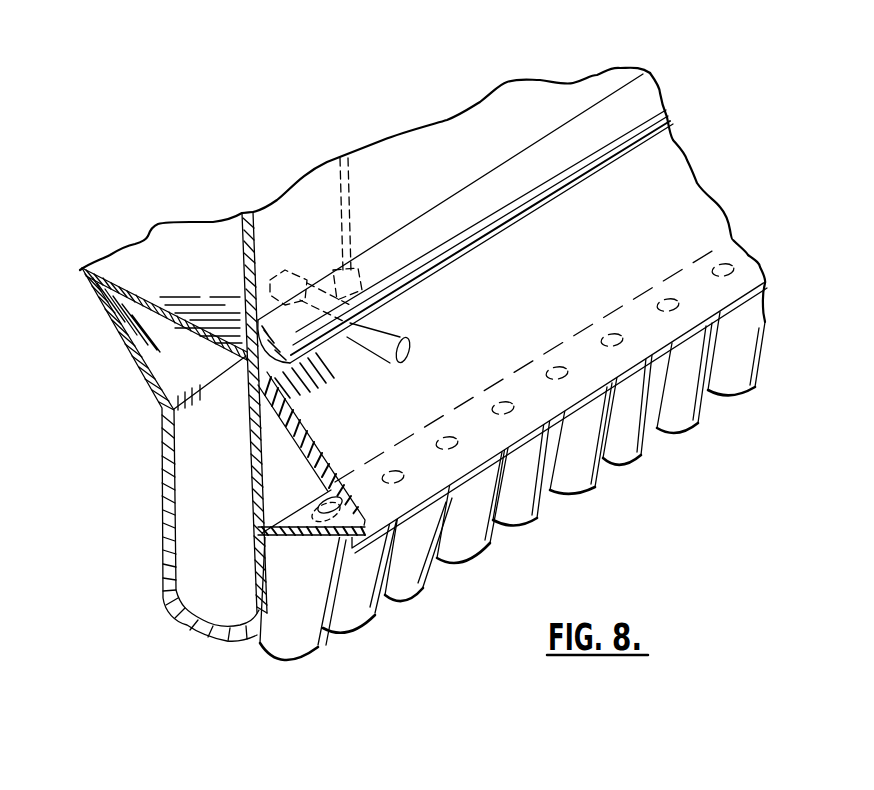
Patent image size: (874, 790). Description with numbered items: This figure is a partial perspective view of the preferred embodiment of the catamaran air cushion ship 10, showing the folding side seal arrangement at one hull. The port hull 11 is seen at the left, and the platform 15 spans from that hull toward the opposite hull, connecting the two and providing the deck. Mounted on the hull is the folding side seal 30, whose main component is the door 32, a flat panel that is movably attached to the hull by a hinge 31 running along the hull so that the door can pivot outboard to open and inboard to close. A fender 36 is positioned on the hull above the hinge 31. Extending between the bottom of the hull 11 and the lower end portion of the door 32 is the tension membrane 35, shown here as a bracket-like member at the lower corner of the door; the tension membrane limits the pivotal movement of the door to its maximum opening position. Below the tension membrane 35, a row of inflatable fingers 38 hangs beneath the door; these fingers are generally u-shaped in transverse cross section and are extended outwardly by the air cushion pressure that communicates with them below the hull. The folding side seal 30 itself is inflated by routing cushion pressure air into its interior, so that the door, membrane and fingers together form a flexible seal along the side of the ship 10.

The catamaran air cushion ship 10 is at (742, 110).
The port hull 11 is at (162, 515).
The platform 15 is at (147, 258).
The folding side seal 30 is at (744, 228).
The hinge 31 is at (250, 410).
The door 32 is at (537, 288).
The tension membrane 35 is at (297, 527).
The fender 36 is at (637, 120).
The inflatable fingers 38 is at (728, 378).